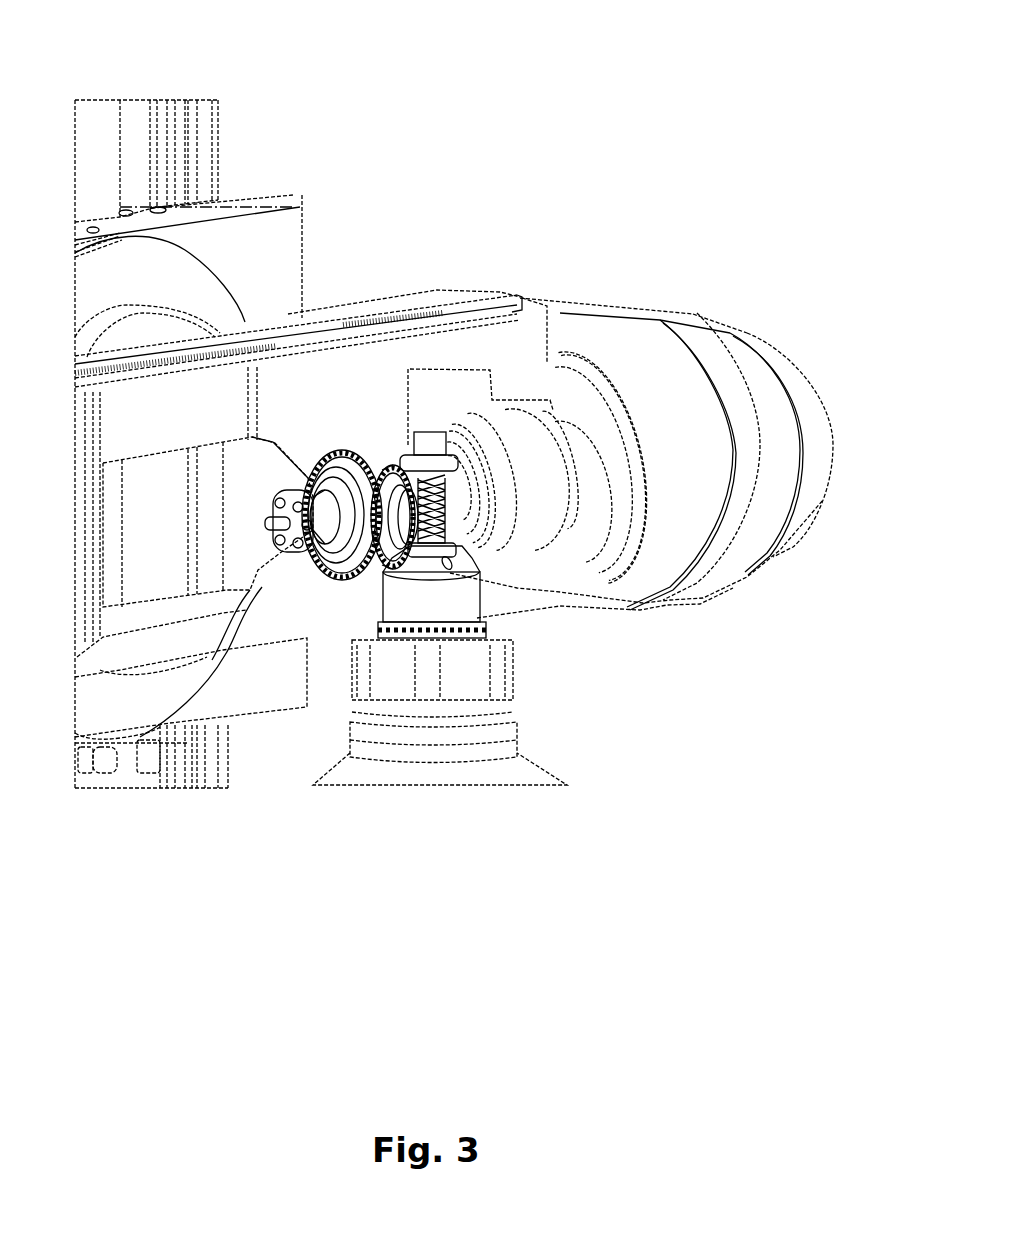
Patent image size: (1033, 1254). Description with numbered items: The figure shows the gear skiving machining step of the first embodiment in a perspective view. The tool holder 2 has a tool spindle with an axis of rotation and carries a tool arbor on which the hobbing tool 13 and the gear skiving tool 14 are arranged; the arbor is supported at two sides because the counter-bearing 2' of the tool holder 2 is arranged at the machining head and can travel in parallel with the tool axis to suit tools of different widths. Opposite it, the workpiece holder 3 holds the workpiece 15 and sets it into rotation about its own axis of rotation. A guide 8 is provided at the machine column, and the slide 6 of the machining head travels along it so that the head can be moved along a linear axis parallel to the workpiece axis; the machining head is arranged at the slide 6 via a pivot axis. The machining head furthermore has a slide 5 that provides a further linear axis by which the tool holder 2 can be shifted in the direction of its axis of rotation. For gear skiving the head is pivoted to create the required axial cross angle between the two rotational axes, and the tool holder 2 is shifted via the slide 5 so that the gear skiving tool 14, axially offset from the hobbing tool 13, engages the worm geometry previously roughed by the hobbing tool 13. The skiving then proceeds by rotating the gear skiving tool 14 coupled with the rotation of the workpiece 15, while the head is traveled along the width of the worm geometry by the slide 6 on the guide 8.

The tool holder 2 is at (640, 520).
The counter-bearing of the tool holder 2' is at (194, 552).
The workpiece holder 3 is at (440, 665).
The slide 5 is at (356, 305).
The slide 6 is at (215, 242).
The guide 8 is at (184, 395).
The hobbing tool 13 is at (328, 443).
The gear skiving tool 14 is at (385, 447).
The workpiece 15 is at (495, 567).